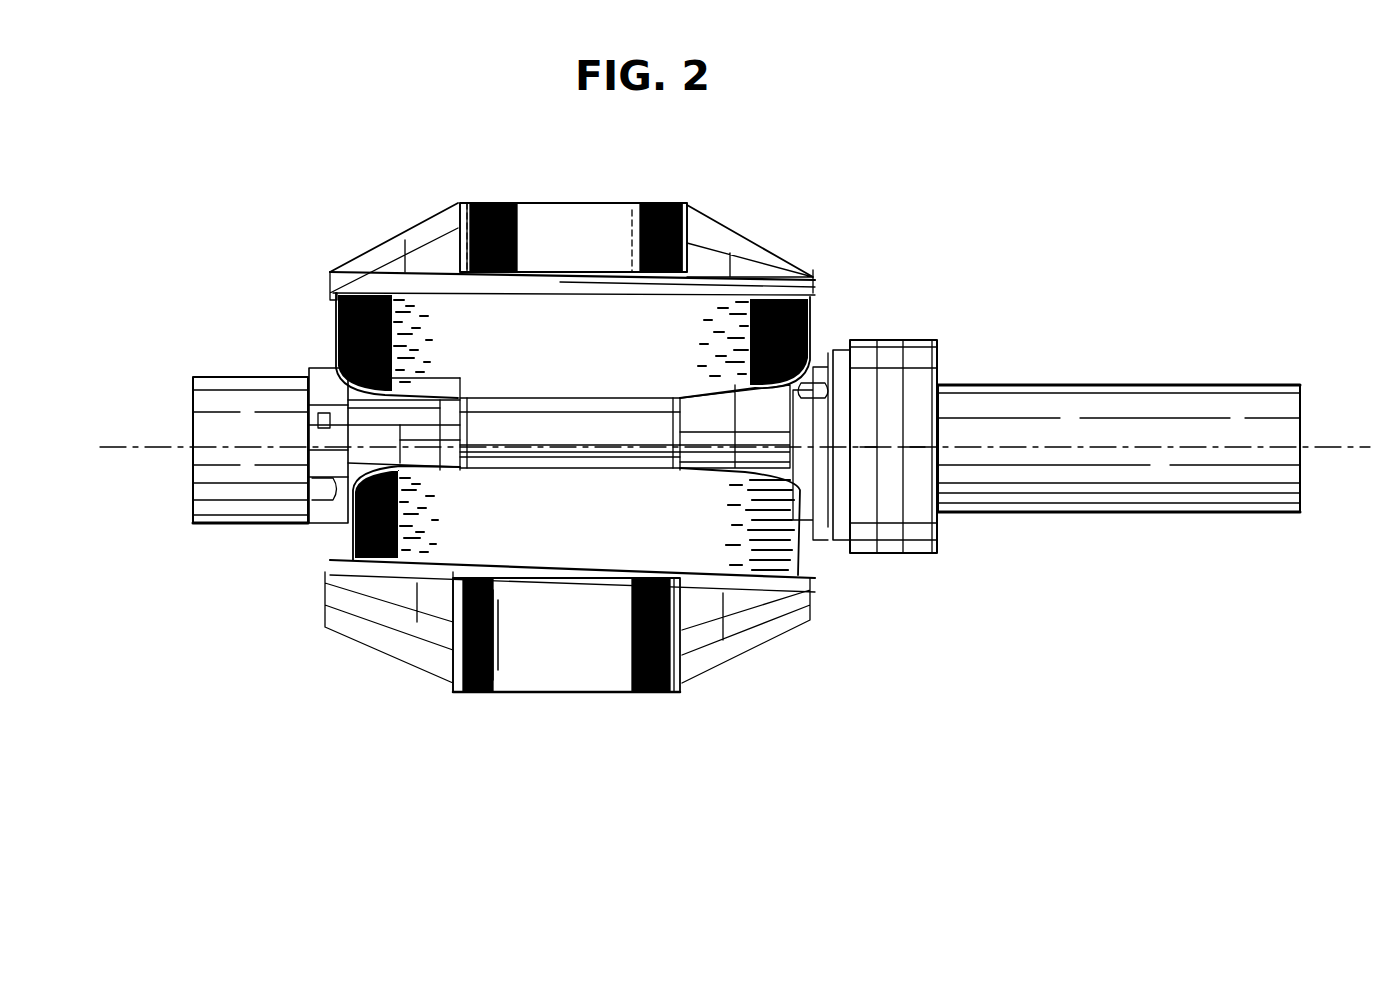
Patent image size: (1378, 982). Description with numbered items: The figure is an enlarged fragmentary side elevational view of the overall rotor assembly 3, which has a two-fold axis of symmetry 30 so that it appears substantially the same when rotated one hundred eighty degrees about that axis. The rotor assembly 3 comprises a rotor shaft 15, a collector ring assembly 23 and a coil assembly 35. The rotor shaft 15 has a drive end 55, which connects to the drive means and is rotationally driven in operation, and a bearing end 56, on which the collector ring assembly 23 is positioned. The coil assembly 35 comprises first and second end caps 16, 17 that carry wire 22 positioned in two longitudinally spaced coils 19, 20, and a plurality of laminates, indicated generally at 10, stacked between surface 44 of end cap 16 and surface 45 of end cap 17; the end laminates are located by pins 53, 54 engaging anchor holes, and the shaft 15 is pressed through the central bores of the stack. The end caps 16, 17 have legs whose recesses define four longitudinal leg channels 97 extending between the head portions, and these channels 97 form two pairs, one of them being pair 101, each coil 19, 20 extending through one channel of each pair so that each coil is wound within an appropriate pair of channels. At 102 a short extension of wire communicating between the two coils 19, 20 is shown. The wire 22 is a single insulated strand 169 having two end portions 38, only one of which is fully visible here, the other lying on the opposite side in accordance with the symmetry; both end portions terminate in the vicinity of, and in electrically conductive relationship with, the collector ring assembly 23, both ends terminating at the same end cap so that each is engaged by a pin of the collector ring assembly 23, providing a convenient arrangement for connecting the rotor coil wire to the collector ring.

The rotor assembly 3 is at (878, 214).
The lamination stack 10 is at (503, 200).
The rotor shaft 15 is at (998, 384).
The first end cap 16 is at (733, 238).
The second end cap 17 is at (388, 248).
The wire coil 19 is at (813, 314).
The wire coil 20 is at (800, 568).
The wire 22 is at (376, 458).
The collector ring assembly 23 is at (920, 332).
The axis of symmetry 30 is at (1333, 447).
The coil assembly 35 is at (550, 694).
The end portion of wire 38 is at (813, 362).
The surface of end cap 44 is at (672, 203).
The surface of end cap 45 is at (480, 202).
The pin 53 is at (641, 214).
The pin 54 is at (522, 208).
The drive end 55 is at (228, 375).
The bearing end 56 is at (1100, 384).
The longitudinal leg channel 97 is at (332, 290).
The pair of channels 101 is at (580, 296).
The wire extension 102 is at (398, 447).
The single strand of wire 169 is at (392, 442).